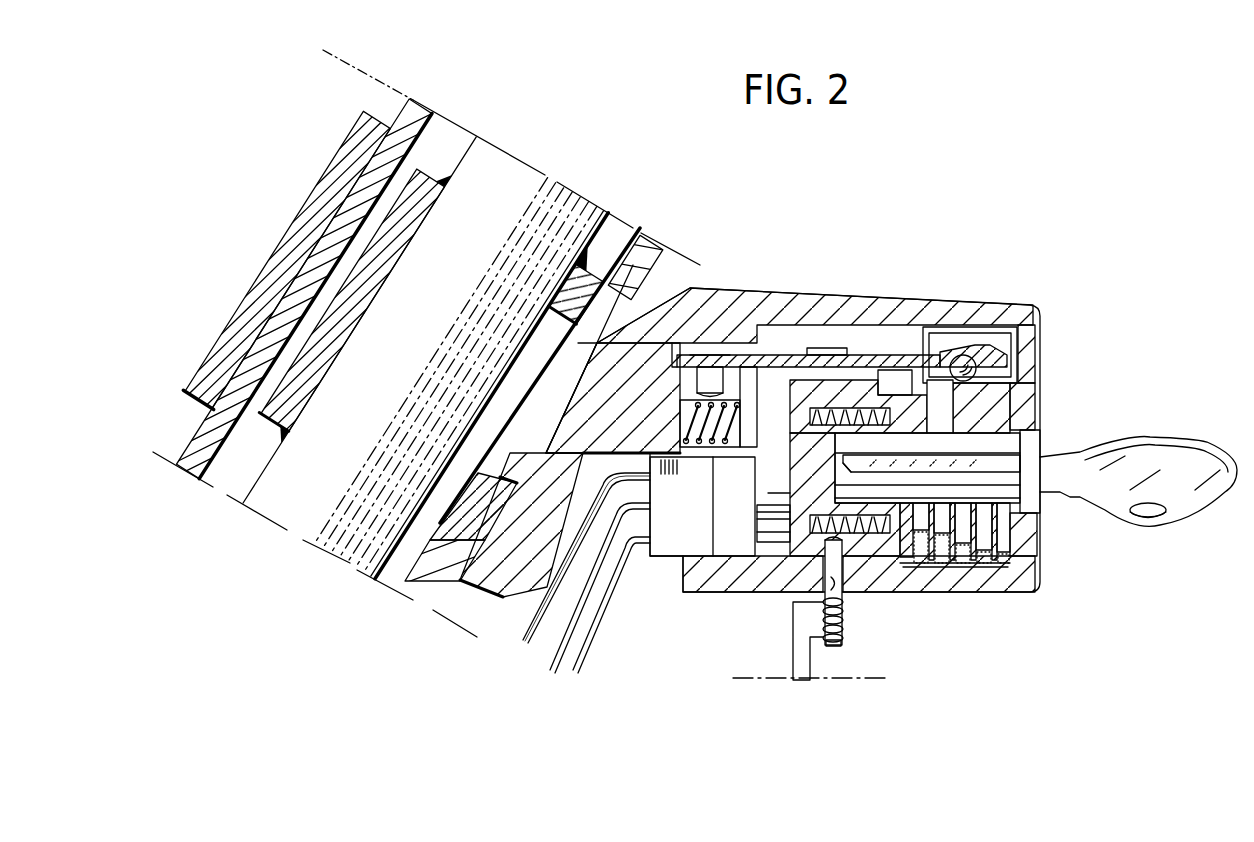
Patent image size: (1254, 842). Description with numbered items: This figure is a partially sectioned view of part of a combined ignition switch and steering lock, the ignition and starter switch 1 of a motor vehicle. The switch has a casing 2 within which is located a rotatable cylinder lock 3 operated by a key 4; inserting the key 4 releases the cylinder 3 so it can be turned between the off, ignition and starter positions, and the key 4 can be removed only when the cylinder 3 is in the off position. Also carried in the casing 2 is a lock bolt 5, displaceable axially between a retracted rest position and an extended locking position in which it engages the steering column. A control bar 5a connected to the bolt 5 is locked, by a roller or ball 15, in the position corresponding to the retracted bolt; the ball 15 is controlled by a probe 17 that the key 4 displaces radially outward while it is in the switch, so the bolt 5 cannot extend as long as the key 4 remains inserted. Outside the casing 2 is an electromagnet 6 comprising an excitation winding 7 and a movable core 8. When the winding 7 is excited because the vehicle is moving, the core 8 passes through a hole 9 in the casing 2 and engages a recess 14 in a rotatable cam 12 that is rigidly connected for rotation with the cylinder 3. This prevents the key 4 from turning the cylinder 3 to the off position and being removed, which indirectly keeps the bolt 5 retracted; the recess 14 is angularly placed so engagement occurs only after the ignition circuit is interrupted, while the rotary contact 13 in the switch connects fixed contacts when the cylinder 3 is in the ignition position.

The combined ignition and starter switch 1 is at (783, 275).
The casing 2 is at (822, 296).
The rotatable cylinder lock 3 is at (1045, 500).
The key 4 is at (1160, 457).
The lock bolt 5 is at (579, 403).
The control bar 5a is at (900, 356).
The electromagnet 6 is at (770, 652).
The excitation winding 7 is at (847, 627).
The movable core 8 is at (831, 646).
The hole 9 is at (845, 607).
The rotatable cam 12 is at (782, 548).
The rotary contact 13 is at (730, 540).
The recess 14 is at (860, 580).
The ball 15 is at (964, 355).
The probe 17 is at (945, 406).